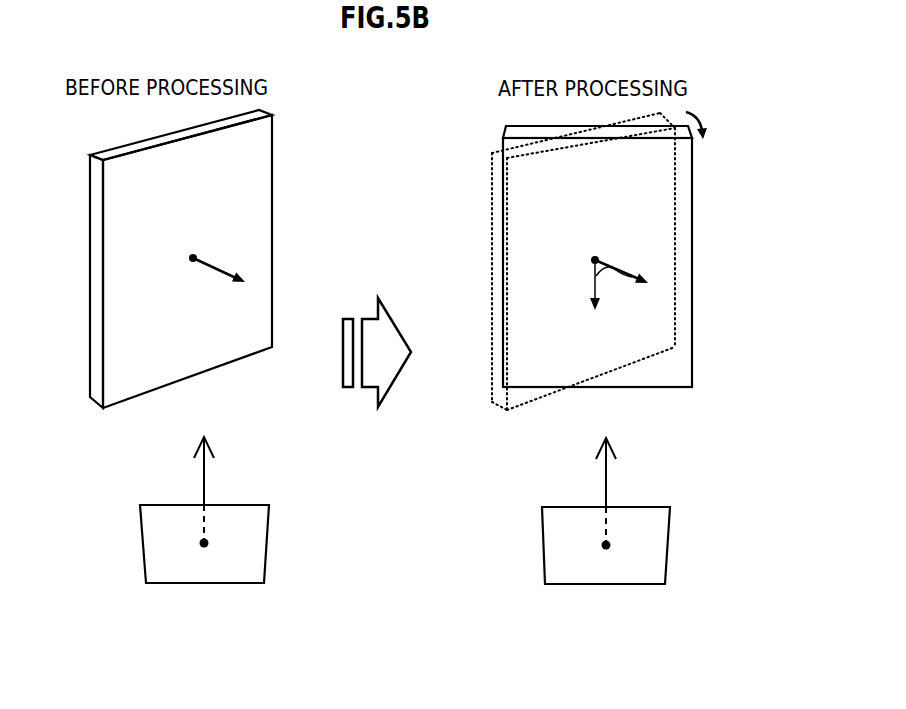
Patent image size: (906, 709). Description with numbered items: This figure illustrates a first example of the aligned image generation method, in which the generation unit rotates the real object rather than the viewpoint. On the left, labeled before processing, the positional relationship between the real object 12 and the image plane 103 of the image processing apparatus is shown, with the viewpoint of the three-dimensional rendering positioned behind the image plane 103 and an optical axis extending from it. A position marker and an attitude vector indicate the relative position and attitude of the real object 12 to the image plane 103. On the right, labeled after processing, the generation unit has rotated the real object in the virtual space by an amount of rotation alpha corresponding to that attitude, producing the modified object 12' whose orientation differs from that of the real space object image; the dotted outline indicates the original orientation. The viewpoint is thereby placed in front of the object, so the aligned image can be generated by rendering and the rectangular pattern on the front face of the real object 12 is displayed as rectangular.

The real object 12 is at (215, 259).
The object (panel) after processing 12' is at (630, 257).
The image plane 103 is at (257, 548).